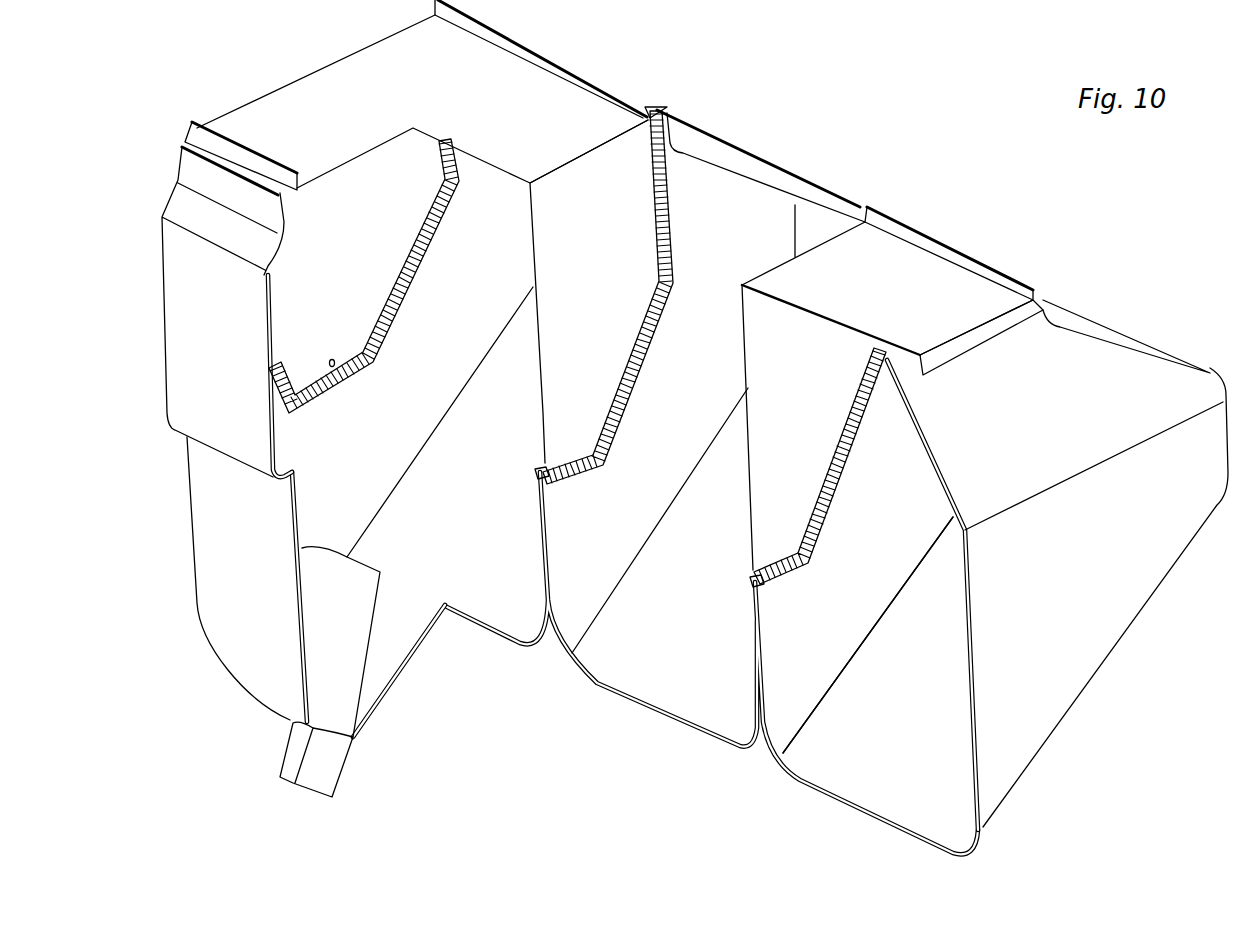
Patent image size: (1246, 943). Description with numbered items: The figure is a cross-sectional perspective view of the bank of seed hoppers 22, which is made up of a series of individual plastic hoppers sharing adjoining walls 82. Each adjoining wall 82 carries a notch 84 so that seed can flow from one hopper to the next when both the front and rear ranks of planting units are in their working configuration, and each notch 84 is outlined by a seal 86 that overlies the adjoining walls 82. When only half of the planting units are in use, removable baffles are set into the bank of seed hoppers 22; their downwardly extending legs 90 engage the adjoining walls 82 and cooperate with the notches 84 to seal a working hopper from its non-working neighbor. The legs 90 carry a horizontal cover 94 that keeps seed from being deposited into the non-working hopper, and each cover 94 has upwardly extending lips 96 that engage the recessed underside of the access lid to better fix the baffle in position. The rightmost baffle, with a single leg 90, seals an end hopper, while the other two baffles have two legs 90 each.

The bank of seed hoppers 22 is at (835, 160).
The adjoining walls 82 is at (540, 572).
The notches 84 is at (334, 341).
The seal 86 is at (360, 373).
The downwardly extending legs 90 is at (356, 232).
The horizontal cover 94 is at (496, 103).
The upwardly extending lips 96 is at (540, 46).